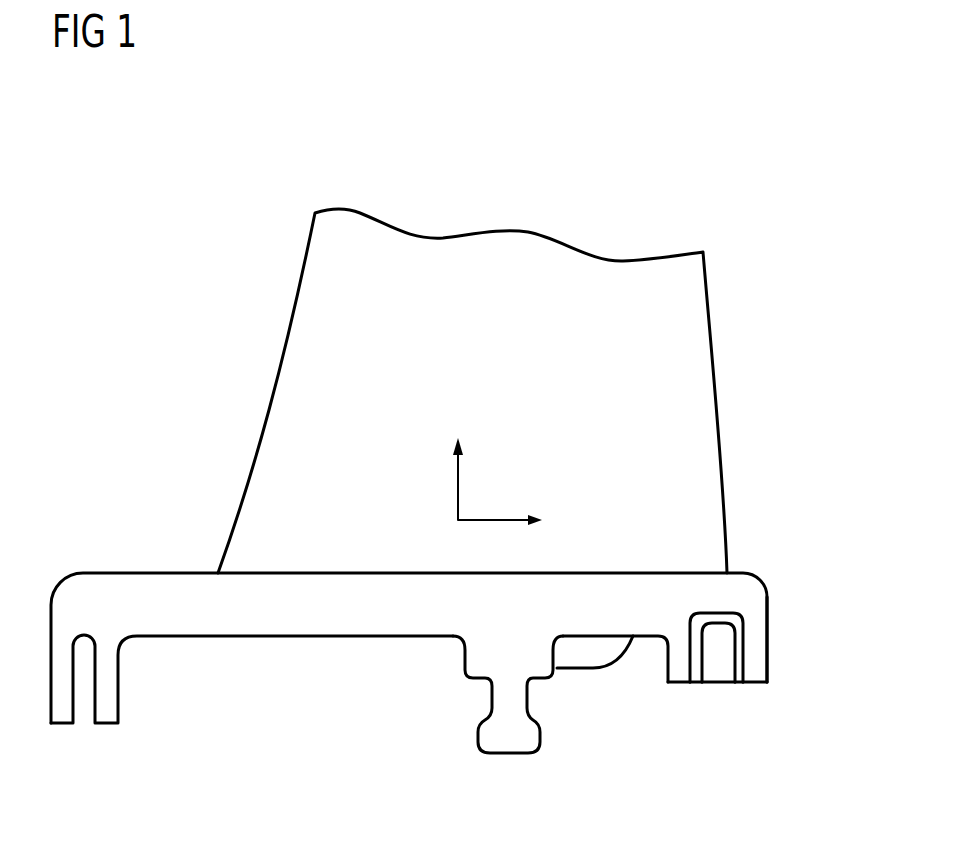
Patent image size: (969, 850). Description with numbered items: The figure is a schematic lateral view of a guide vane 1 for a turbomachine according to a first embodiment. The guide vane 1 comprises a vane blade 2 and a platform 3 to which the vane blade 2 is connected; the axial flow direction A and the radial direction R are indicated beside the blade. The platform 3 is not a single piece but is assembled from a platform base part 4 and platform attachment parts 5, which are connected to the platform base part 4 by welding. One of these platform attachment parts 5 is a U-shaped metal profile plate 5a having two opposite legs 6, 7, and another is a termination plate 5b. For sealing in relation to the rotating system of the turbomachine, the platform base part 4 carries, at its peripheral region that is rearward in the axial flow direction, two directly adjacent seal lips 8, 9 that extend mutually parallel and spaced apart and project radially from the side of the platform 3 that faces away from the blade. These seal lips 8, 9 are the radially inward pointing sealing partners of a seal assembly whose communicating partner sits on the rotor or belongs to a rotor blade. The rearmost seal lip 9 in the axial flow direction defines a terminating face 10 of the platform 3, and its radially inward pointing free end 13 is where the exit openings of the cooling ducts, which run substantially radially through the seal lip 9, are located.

The guide vane 1 is at (375, 133).
The vane blade 2 is at (700, 392).
The platform 3 is at (125, 573).
The platform base part 4 is at (280, 622).
The platform attachment parts 5 is at (651, 690).
The U-shaped metal profile plate 5a is at (718, 621).
The termination plate 5b is at (590, 668).
The leg 6 is at (738, 676).
The leg 7 is at (695, 676).
The seal lip 8 is at (758, 658).
The seal lip 9 is at (675, 676).
The terminating face 10 is at (767, 625).
The free end 13 is at (757, 676).